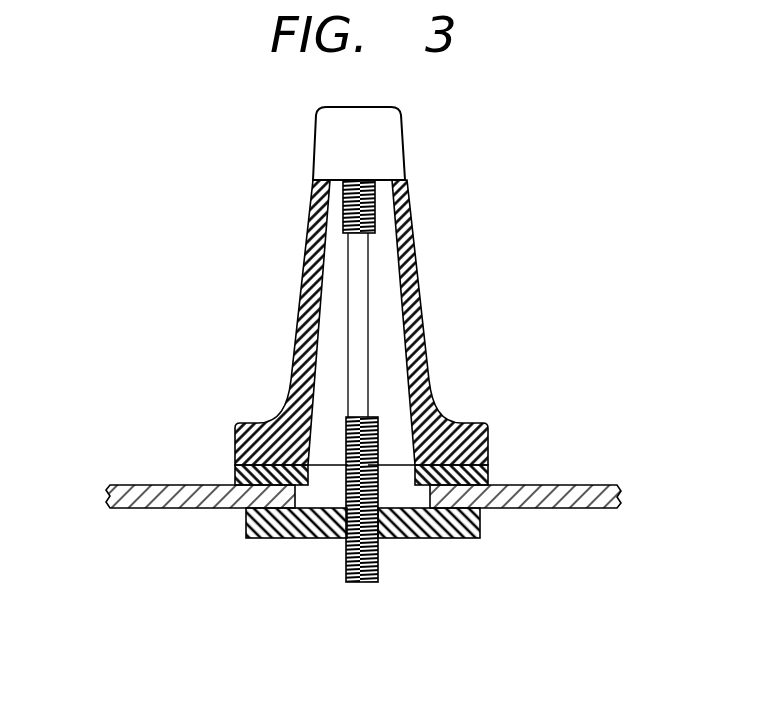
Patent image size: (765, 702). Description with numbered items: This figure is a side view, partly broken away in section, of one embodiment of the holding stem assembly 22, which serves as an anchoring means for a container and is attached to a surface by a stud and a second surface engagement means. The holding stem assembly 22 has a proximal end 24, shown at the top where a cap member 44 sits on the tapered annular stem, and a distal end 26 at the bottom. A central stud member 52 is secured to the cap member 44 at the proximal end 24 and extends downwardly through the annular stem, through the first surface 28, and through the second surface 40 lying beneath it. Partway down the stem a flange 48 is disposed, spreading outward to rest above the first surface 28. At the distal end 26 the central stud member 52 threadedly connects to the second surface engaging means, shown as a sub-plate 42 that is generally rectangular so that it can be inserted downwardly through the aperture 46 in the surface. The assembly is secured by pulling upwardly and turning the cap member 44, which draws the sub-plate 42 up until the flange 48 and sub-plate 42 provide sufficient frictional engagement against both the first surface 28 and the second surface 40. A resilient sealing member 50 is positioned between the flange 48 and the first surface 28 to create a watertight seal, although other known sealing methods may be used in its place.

The holding stem assembly 22 is at (162, 284).
The proximal end 24 is at (418, 263).
The distal end 26 is at (395, 551).
The first surface 28 is at (578, 485).
The second surface 40 is at (555, 508).
The sub-plate 42 is at (246, 522).
The cap member 44 is at (401, 139).
The aperture 46 is at (485, 508).
The flange 48 is at (483, 423).
The resilient sealing member 50 is at (490, 468).
The central stud member 52 is at (370, 348).